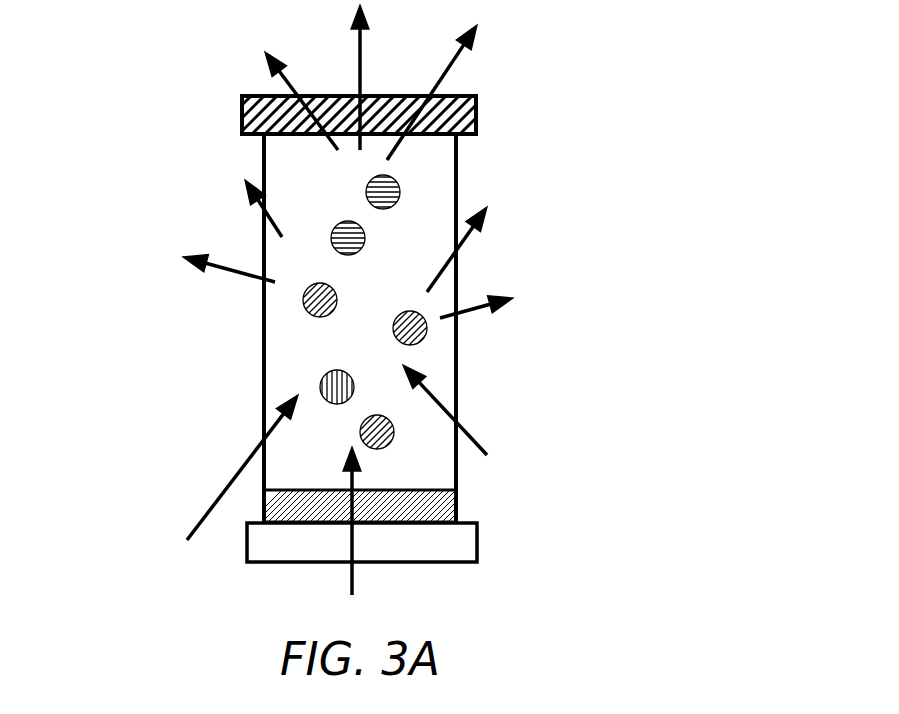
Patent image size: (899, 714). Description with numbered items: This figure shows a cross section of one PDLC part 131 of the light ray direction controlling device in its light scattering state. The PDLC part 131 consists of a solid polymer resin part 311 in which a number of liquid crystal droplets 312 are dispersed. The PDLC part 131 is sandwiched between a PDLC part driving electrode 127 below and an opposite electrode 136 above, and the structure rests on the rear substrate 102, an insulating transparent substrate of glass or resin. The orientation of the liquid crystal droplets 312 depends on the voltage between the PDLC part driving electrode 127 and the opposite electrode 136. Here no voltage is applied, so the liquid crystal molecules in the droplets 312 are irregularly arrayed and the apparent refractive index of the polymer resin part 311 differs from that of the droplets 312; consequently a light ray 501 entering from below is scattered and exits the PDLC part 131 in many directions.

The opposite electrode 136 is at (476, 118).
The liquid crystal droplets 312 is at (398, 185).
The PDLC part 131 is at (545, 238).
The polymer resin part 311 is at (398, 307).
The light ray 501 is at (472, 432).
The PDLC part driving electrode 127 is at (456, 515).
The rear substrate 102 is at (477, 542).